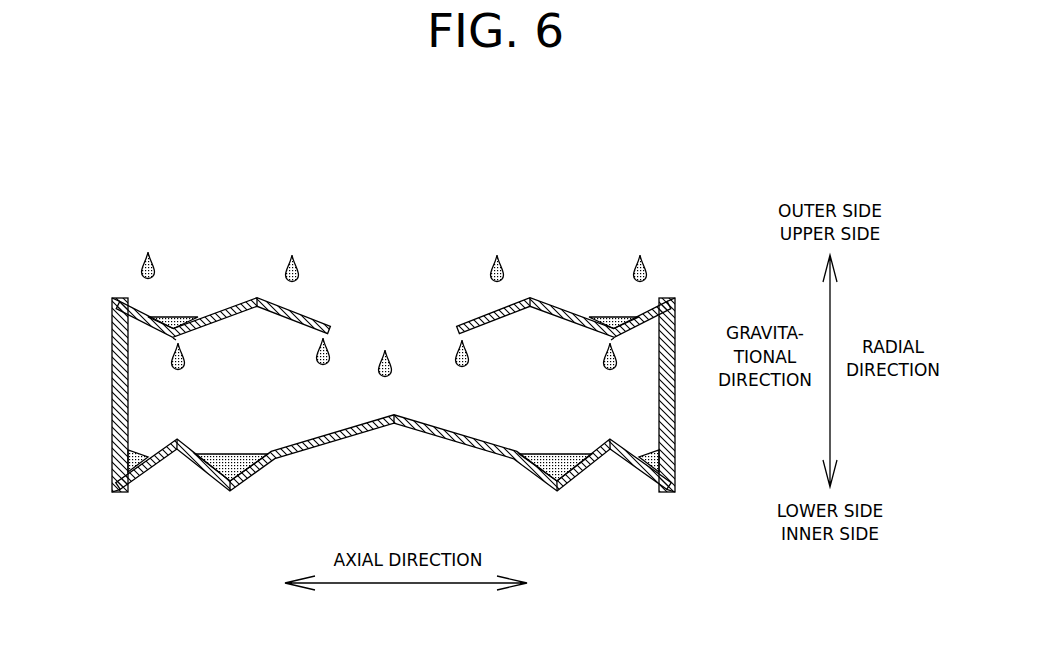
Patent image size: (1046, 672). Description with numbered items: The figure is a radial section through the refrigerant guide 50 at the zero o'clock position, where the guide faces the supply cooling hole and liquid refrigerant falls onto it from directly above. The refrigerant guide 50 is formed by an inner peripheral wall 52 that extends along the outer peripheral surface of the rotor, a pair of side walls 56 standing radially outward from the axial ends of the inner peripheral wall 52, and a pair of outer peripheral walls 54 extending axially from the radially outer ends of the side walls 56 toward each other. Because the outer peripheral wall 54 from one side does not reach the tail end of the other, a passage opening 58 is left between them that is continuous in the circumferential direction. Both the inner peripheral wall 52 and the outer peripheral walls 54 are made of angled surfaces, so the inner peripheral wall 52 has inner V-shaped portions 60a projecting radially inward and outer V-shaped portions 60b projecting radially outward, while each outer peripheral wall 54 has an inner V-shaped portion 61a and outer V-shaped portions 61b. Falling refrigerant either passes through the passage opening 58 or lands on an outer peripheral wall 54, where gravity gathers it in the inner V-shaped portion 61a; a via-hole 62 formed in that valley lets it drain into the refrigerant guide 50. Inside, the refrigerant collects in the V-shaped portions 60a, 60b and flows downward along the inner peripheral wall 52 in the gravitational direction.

The refrigerant guide 50 is at (420, 233).
The inner peripheral wall 52 is at (440, 433).
The outer peripheral wall 54 is at (322, 326).
The side wall 56 is at (112, 372).
The passage opening 58 is at (402, 340).
The inner V-shaped portion 60a is at (113, 493).
The outer V-shaped portion 60b is at (177, 449).
The inner V-shaped portion 61a is at (175, 320).
The outer V-shaped portion 61b is at (113, 297).
The via-hole 62 is at (187, 342).